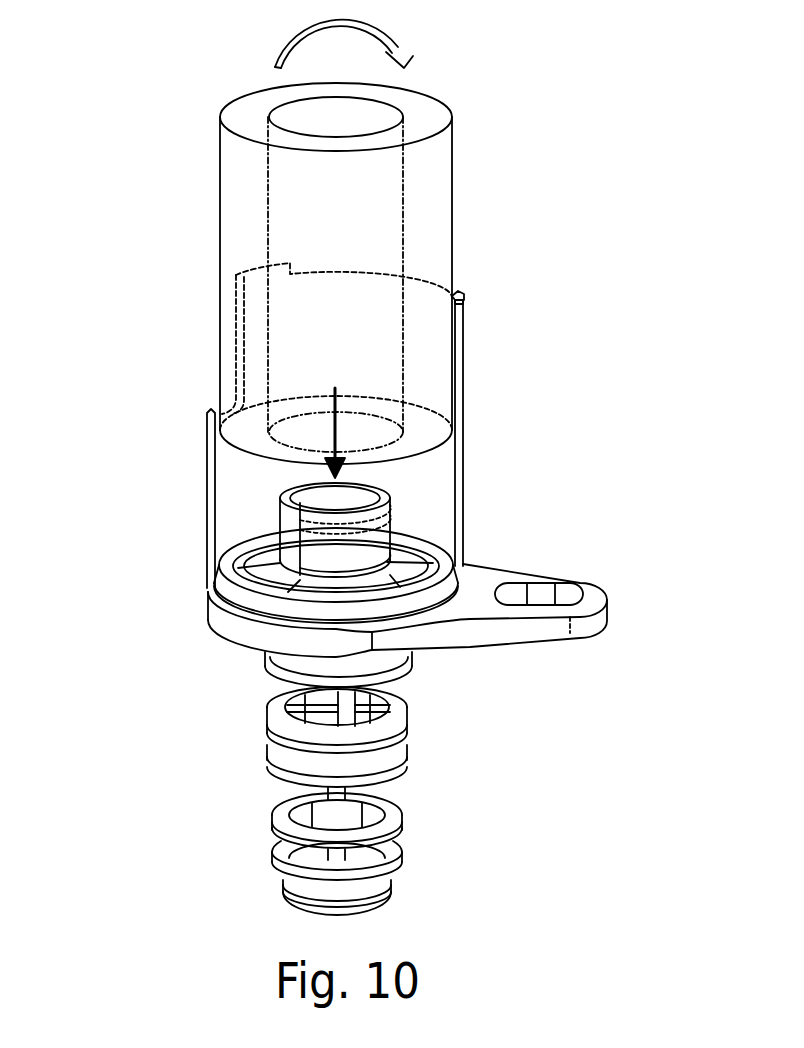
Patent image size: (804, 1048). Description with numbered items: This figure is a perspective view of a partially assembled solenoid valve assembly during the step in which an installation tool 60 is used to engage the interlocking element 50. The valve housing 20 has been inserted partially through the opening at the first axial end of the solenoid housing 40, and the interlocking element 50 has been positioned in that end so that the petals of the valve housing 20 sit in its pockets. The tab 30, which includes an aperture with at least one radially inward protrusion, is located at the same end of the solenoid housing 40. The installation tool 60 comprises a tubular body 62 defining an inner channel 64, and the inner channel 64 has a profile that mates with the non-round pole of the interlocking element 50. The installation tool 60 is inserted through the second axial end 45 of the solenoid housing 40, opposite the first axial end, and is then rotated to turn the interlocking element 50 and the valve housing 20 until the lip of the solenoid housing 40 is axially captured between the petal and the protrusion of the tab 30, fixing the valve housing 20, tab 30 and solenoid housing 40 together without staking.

The valve housing 20 is at (268, 725).
The tab 30 is at (580, 637).
The solenoid housing 40 is at (384, 425).
The second axial end 45 is at (464, 297).
The interlocking element 50 is at (328, 543).
The installation tool 60 is at (336, 273).
The tubular body 62 is at (427, 196).
The inner channel 64 is at (303, 210).